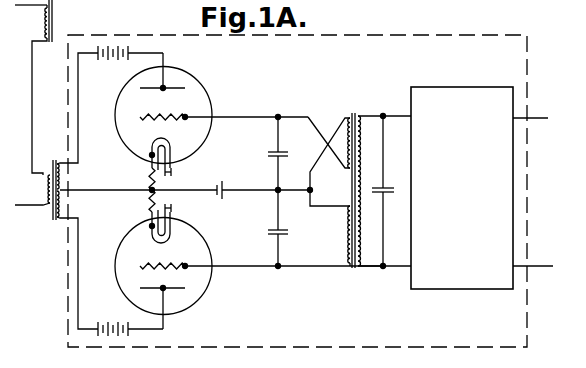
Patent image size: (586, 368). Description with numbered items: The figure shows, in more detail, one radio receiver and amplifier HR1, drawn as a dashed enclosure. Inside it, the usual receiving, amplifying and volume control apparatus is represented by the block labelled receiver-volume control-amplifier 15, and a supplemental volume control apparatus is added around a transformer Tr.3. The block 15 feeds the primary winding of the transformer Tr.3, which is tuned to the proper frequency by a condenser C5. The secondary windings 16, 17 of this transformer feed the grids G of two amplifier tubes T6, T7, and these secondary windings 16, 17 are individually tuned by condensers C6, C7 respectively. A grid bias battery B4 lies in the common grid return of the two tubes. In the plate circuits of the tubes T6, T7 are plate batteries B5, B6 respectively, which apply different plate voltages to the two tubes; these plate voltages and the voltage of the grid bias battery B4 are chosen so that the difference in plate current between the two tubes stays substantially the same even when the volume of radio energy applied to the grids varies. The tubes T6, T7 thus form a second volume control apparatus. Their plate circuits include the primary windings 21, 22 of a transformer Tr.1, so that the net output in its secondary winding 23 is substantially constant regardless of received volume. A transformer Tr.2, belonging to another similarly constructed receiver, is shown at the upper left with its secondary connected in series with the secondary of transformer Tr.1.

The radio receiver and amplifier HR1 is at (385, 31).
The transformer Tr.2 is at (37, 87).
The transformer Tr.1 is at (47, 183).
The secondary winding 23 is at (32, 190).
The primary winding 21 is at (62, 178).
The primary winding 22 is at (62, 205).
The plate battery B5 is at (106, 60).
The plate battery B6 is at (106, 325).
The grid bias battery B4 is at (218, 186).
The amplifier tube T6 is at (205, 81).
The amplifier tube T7 is at (204, 289).
The grid G is at (178, 119).
The condenser C6 is at (290, 151).
The condenser C7 is at (290, 226).
The condenser C5 is at (395, 185).
The transformer Tr.3 is at (352, 114).
The secondary winding 16 is at (345, 163).
The secondary winding 17 is at (348, 238).
The receiver-volume control-amplifier 15 is at (464, 83).